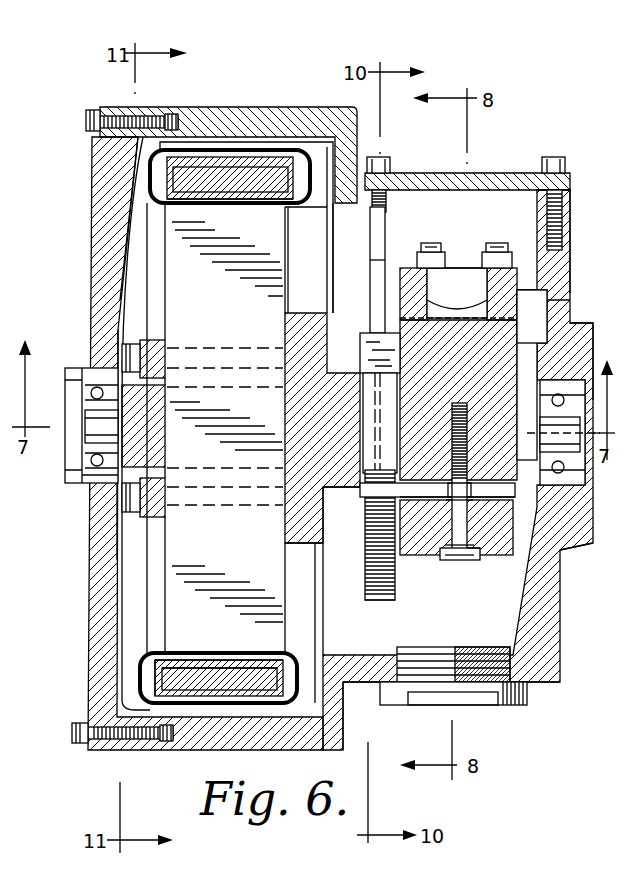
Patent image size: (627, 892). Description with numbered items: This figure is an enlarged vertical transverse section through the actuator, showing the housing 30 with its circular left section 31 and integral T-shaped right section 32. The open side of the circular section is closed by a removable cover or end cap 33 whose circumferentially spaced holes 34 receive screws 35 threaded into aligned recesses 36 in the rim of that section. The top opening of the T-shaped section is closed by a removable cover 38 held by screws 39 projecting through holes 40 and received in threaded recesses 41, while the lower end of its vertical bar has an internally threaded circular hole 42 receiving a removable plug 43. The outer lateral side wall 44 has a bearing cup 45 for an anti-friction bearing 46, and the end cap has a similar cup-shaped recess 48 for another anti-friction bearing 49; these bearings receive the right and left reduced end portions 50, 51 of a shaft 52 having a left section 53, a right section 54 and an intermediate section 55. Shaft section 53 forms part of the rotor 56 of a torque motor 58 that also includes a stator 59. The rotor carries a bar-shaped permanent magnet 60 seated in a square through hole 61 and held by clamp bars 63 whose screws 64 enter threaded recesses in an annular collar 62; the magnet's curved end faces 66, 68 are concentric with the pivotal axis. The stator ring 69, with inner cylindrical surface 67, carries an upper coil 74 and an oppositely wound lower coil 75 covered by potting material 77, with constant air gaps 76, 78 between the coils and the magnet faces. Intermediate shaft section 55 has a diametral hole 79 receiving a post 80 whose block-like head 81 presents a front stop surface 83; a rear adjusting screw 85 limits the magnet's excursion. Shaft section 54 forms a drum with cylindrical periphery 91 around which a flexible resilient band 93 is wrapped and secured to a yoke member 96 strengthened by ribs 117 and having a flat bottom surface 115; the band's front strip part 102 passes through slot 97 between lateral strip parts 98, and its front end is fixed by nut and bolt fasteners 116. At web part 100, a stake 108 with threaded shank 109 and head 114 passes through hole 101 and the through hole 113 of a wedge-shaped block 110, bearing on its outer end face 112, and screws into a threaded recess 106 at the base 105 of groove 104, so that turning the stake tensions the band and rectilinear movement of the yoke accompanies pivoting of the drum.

The housing 30 is at (346, 692).
The circular left section 31 is at (286, 107).
The T-shaped right section 32 is at (558, 690).
The cover or end cap 33 is at (88, 594).
The holes 34 is at (118, 118).
The screws 35 is at (86, 119).
The recesses 36 is at (178, 122).
The cover 38 is at (572, 181).
The screws 39 is at (380, 155).
The holes 40 is at (400, 172).
The threaded recesses 41 is at (388, 201).
The internally threaded circular hole 42 is at (401, 660).
The removable plug 43 is at (506, 706).
The outer lateral side wall 44 is at (550, 608).
The bearing cup 45 is at (572, 375).
The anti-friction bearing 46 is at (561, 488).
The cup-shaped recess 48 is at (82, 379).
The anti-friction bearing 49 is at (78, 483).
The right reduced end portion 50 is at (588, 392).
The left reduced end portion 51 is at (82, 432).
The shaft 52 is at (338, 360).
The left shaft section 53 is at (119, 379).
The right shaft section 54 is at (534, 316).
The intermediate shaft section 55 is at (340, 493).
The rotor 56 is at (313, 550).
The torque motor 58 is at (134, 316).
The stator 59 is at (130, 618).
The permanent magnet 60 is at (240, 331).
The square-shaped through hole 61 is at (167, 455).
The annular collar 62 is at (290, 334).
The clamp bars 63 is at (160, 336).
The screws 64 is at (118, 342).
The outer end face 66 is at (236, 208).
The inner cylindrical surface 67 is at (238, 661).
The outer end face 68 is at (192, 642).
The stator ring 69 is at (217, 670).
The upper coil 74 is at (219, 160).
The lower coil 75 is at (222, 700).
The air gap 76 is at (202, 205).
The potting material 77 is at (259, 155).
The air gap 78 is at (173, 653).
The diametral hole 79 is at (372, 485).
The post 80 is at (382, 490).
The head 81 is at (398, 335).
The front stop surface 83 is at (360, 367).
The rear adjusting screw 85 is at (364, 621).
The cylindrical periphery 91 is at (547, 337).
The flexible resilient band 93 is at (543, 312).
The yoke member 96 is at (462, 270).
The slot 97 is at (410, 300).
The lateral strip parts 98 is at (420, 317).
The web part 100 is at (493, 548).
The central hole 101 is at (444, 560).
The central strip part 102 is at (436, 316).
The groove 104 is at (566, 545).
The base 105 is at (418, 488).
The internally threaded radial recess 106 is at (454, 415).
The stake 108 is at (471, 552).
The externally threaded shank portion 109 is at (479, 556).
The block 110 is at (426, 556).
The outer end face 112 is at (432, 560).
The through hole 113 is at (448, 560).
The head 114 is at (433, 558).
The flat horizontal bottom surface 115 is at (541, 289).
The nut and bolt fasteners 116 is at (431, 244).
The ribs 117 is at (406, 265).